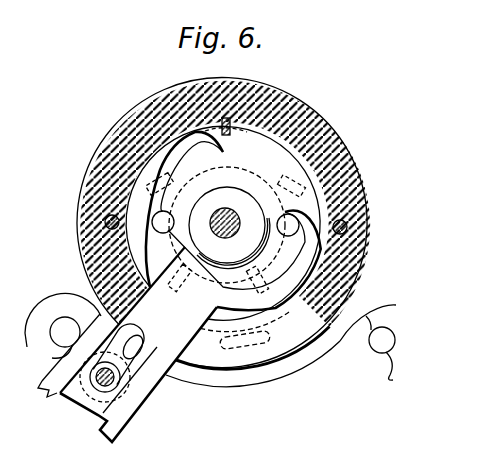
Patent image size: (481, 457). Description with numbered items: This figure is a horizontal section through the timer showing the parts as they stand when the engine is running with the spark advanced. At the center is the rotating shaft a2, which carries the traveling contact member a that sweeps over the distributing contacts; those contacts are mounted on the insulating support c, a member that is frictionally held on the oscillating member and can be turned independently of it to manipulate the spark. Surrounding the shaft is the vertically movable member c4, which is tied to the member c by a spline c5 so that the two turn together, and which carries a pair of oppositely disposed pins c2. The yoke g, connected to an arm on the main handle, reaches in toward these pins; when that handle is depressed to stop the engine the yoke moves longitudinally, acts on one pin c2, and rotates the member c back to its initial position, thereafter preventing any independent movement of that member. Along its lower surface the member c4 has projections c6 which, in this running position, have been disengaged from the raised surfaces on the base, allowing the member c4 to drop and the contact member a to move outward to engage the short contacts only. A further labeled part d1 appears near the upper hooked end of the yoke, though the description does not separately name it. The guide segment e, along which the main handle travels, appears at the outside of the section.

The insulating support c is at (290, 99).
The pins or projections c2 is at (174, 225).
The vertically movable member c4 is at (222, 340).
The spline c5 is at (226, 163).
The projections c6 is at (243, 261).
The pawl hook d1 is at (235, 160).
The rotating shaft a2 is at (229, 204).
The yoke g is at (138, 344).
The traveling contact member a is at (50, 379).
The guide segment e is at (362, 344).